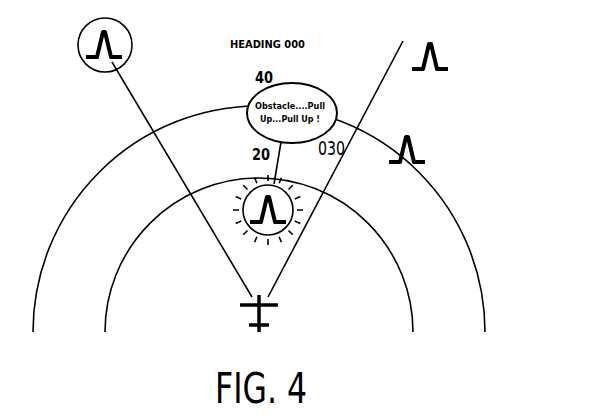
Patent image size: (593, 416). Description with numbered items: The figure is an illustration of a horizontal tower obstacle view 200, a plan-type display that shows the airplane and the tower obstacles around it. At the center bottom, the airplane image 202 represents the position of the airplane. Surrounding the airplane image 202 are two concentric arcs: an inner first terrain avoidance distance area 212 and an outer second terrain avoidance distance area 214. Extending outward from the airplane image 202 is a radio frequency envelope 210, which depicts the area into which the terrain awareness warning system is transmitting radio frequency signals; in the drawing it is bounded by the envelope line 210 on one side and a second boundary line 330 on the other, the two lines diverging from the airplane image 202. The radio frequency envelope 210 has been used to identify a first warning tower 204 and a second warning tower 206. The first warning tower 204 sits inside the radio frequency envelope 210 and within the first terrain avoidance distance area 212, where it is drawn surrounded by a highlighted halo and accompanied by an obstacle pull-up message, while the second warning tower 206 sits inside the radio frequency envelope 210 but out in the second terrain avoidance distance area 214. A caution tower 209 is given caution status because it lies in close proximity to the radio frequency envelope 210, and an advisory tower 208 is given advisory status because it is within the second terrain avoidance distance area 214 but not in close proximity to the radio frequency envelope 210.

The horizontal tower obstacle view 200 is at (493, 106).
The airplane image 202 is at (262, 313).
The first warning tower 204 is at (282, 213).
The second warning tower 206 is at (80, 39).
The advisory tower 208 is at (418, 145).
The caution tower 209 is at (437, 53).
The radio frequency envelope 210 is at (377, 92).
The first terrain avoidance distance area 212 is at (403, 272).
The second terrain avoidance distance area 214 is at (487, 318).
The bearing line 330 is at (182, 179).